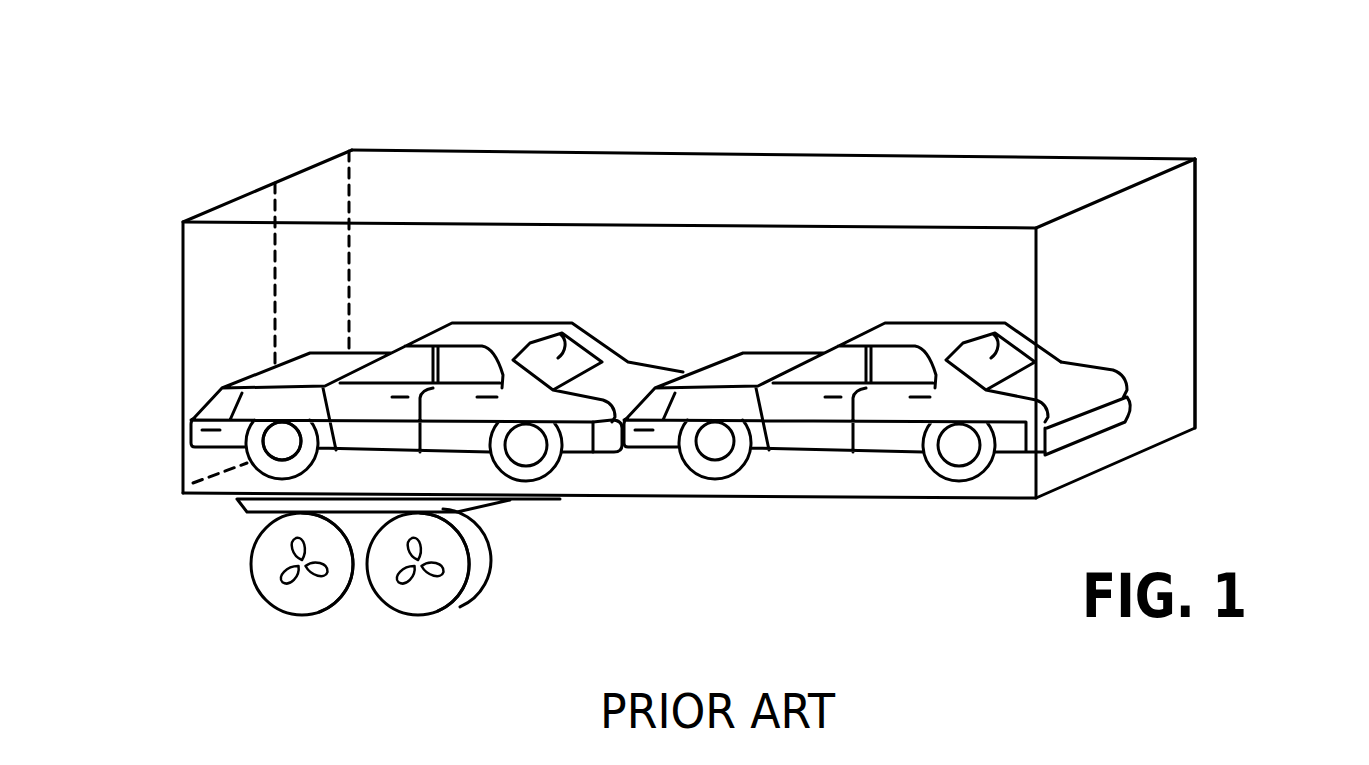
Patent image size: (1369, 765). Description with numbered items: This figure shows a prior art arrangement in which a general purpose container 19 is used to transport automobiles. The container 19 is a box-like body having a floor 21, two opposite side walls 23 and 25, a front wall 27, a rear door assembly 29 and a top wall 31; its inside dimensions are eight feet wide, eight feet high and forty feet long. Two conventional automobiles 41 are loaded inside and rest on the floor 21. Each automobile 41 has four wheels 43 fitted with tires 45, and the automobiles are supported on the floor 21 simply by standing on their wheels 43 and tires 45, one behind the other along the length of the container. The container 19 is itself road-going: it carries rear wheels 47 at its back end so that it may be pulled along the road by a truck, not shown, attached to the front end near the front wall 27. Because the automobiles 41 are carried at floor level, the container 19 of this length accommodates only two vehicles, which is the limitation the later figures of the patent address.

The general purpose container 19 is at (1215, 177).
The floor 21 is at (838, 483).
The side wall 23 is at (957, 257).
The side wall 25 is at (1117, 158).
The front wall 27 is at (1142, 278).
The rear door assembly 29 is at (182, 267).
The top wall 31 is at (822, 178).
The automobile 41 is at (575, 403).
The wheel 43 is at (283, 438).
The tire 45 is at (247, 460).
The rear wheel 47 is at (433, 615).